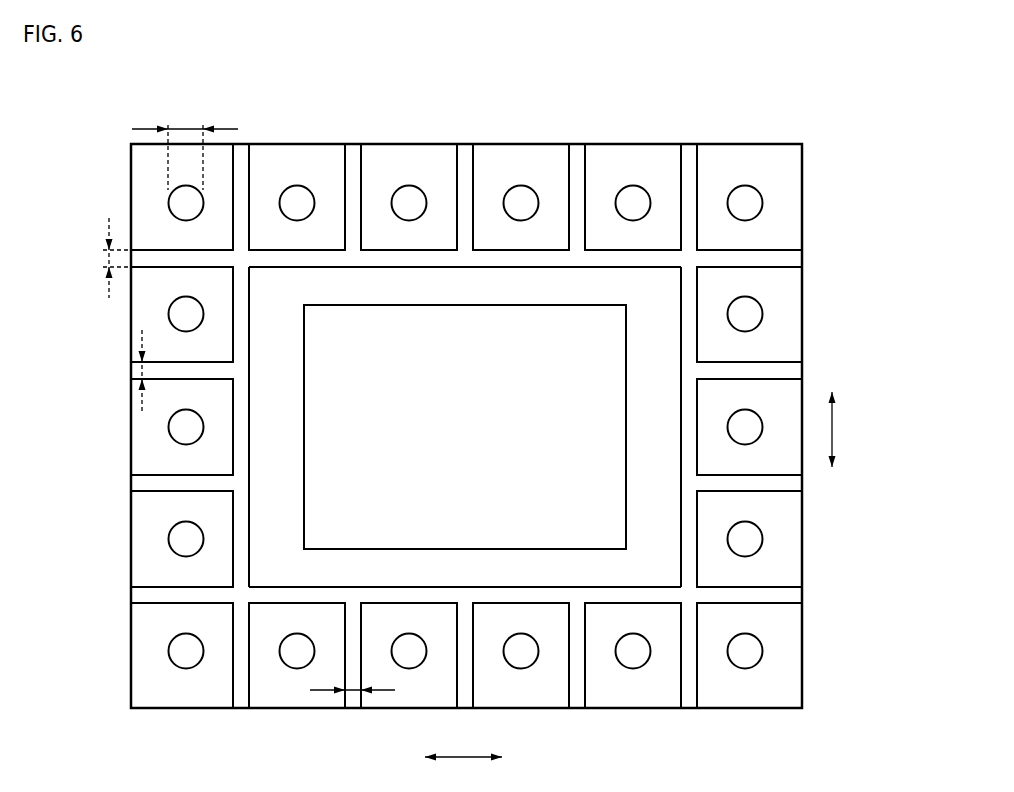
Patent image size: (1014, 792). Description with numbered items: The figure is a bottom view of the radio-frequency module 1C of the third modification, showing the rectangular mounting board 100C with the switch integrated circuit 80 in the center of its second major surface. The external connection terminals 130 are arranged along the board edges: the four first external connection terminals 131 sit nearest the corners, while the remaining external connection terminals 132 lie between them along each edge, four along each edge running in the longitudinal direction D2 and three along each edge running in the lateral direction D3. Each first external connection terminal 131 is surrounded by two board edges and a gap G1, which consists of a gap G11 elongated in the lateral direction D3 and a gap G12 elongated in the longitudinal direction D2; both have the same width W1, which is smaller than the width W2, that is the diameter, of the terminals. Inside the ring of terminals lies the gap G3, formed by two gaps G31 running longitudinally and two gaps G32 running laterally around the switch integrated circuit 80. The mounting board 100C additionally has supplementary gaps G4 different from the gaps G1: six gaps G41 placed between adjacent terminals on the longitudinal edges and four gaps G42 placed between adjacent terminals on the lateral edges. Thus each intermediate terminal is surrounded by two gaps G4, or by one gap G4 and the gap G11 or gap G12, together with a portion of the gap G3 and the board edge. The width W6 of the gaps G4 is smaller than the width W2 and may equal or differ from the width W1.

The radio-frequency module 1C is at (810, 113).
The mounting board 100C is at (804, 151).
The external connection terminals 130 is at (463, 426).
The first external connection terminals 131 is at (168, 197).
The external connection terminals 132 is at (808, 548).
The switch integrated circuit 80 is at (618, 426).
The gap G1 is at (487, 448).
The gap G11 is at (242, 623).
The gap G12 is at (153, 595).
The gap G3 is at (464, 426).
The gap G31 is at (396, 256).
The gap G32 is at (684, 303).
The supplementary gap G4 is at (463, 427).
The gap G41 is at (357, 722).
The gap G42 is at (135, 372).
The width of gap G1 W1 is at (100, 258).
The width of external connection terminals W2 is at (185, 146).
The width of gaps G4 W6 is at (267, 512).
The longitudinal direction D2 is at (463, 745).
The lateral direction D3 is at (846, 429).